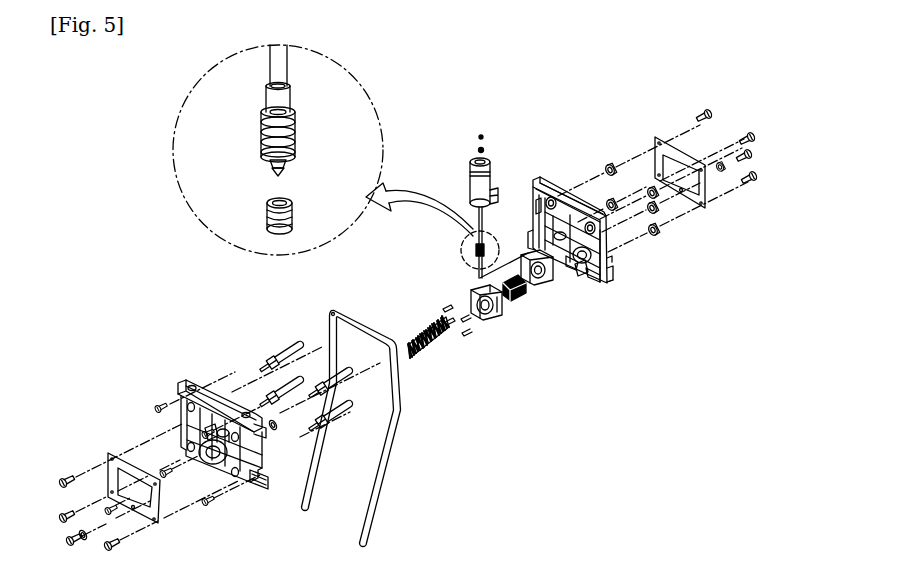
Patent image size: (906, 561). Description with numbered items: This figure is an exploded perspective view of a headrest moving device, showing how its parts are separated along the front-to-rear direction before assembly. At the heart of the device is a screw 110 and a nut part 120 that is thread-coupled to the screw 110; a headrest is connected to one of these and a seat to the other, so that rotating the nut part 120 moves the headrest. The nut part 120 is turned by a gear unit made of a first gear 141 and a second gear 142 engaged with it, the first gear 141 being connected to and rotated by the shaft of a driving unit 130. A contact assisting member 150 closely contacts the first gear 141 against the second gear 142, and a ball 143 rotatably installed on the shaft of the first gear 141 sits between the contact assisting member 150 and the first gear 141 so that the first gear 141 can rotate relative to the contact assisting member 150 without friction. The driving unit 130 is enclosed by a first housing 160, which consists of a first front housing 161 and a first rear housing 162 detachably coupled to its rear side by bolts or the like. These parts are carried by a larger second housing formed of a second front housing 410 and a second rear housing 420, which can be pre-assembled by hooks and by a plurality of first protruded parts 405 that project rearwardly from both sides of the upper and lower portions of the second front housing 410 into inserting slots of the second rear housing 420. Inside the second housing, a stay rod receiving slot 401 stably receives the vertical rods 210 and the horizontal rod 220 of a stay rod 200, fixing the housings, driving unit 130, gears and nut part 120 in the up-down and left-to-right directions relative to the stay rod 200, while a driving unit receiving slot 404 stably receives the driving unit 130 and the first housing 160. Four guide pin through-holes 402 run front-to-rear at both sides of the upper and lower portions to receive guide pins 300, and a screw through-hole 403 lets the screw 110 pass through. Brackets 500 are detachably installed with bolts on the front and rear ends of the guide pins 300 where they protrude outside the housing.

The screw 110 is at (427, 331).
The nut part 120 is at (513, 301).
The driving unit 130 is at (470, 172).
The first gear 141 is at (297, 131).
The second gear 142 is at (505, 267).
The ball 143 is at (273, 169).
The contact assisting member 150 is at (268, 221).
The first housing 160 is at (533, 355).
The first front housing 161 is at (490, 324).
The first rear housing 162 is at (547, 286).
The stay rod 200 is at (390, 404).
The vertical rods 210 is at (400, 385).
The horizontal rod 220 is at (359, 323).
The guide pins 300 is at (292, 350).
The stay rod receiving slot 401 is at (596, 217).
The guide pin through-holes 402 is at (590, 275).
The screw through-hole 403 is at (570, 268).
The driving unit receiving slot 404 is at (538, 222).
The first protruded parts 405 is at (262, 488).
The second front housing 410 is at (178, 385).
The second rear housing 420 is at (618, 283).
The brackets 500 is at (112, 470).